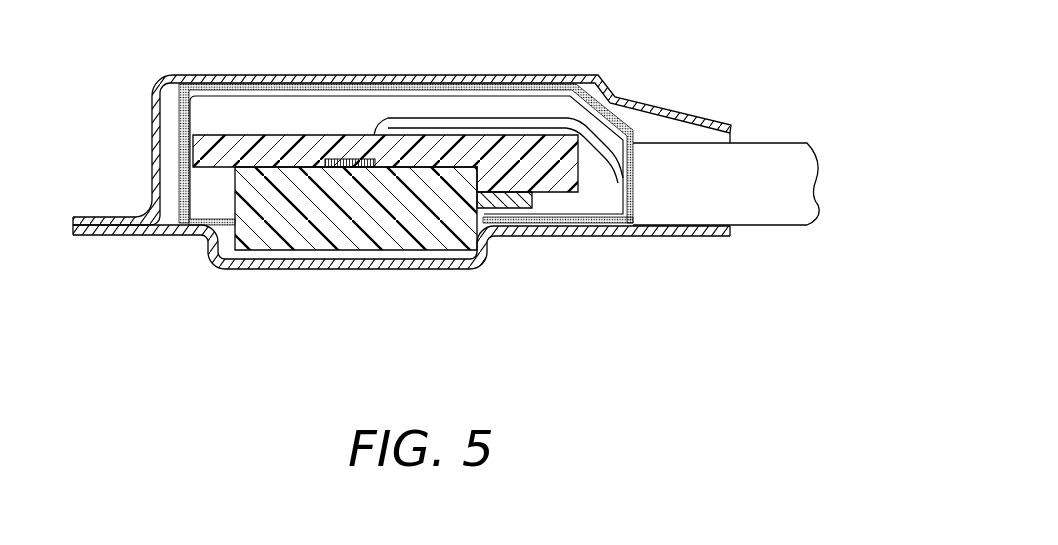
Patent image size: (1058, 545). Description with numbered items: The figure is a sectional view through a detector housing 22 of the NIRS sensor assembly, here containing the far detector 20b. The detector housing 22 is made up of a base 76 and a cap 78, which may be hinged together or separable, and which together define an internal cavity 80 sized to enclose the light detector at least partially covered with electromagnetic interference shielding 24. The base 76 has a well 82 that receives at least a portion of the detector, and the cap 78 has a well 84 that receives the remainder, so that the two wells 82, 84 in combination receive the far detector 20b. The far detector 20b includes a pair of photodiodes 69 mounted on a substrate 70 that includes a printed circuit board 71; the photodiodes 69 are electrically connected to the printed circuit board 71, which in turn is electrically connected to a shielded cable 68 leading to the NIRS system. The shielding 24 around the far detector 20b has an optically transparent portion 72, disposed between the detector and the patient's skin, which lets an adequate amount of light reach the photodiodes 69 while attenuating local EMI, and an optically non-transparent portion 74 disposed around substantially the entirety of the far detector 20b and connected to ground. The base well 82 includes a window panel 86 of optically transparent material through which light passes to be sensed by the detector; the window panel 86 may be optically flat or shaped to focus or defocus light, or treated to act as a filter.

The far detector 20b is at (397, 288).
The detector housing 22 is at (170, 74).
The electromagnetic interference (EMI) shielding 24 is at (614, 114).
The shielded cable 68 is at (503, 117).
The photodiodes 69 is at (412, 233).
The substrate 70 is at (580, 192).
The printed circuit board 71 is at (357, 157).
The optically transparent portion 72 is at (222, 195).
The non-transparent portion 74 is at (181, 111).
The base 76 is at (98, 234).
The cap 78 is at (108, 218).
The internal cavity 80 is at (353, 104).
The well 82 is at (490, 266).
The well 84 is at (153, 150).
The window panel 86 is at (333, 271).